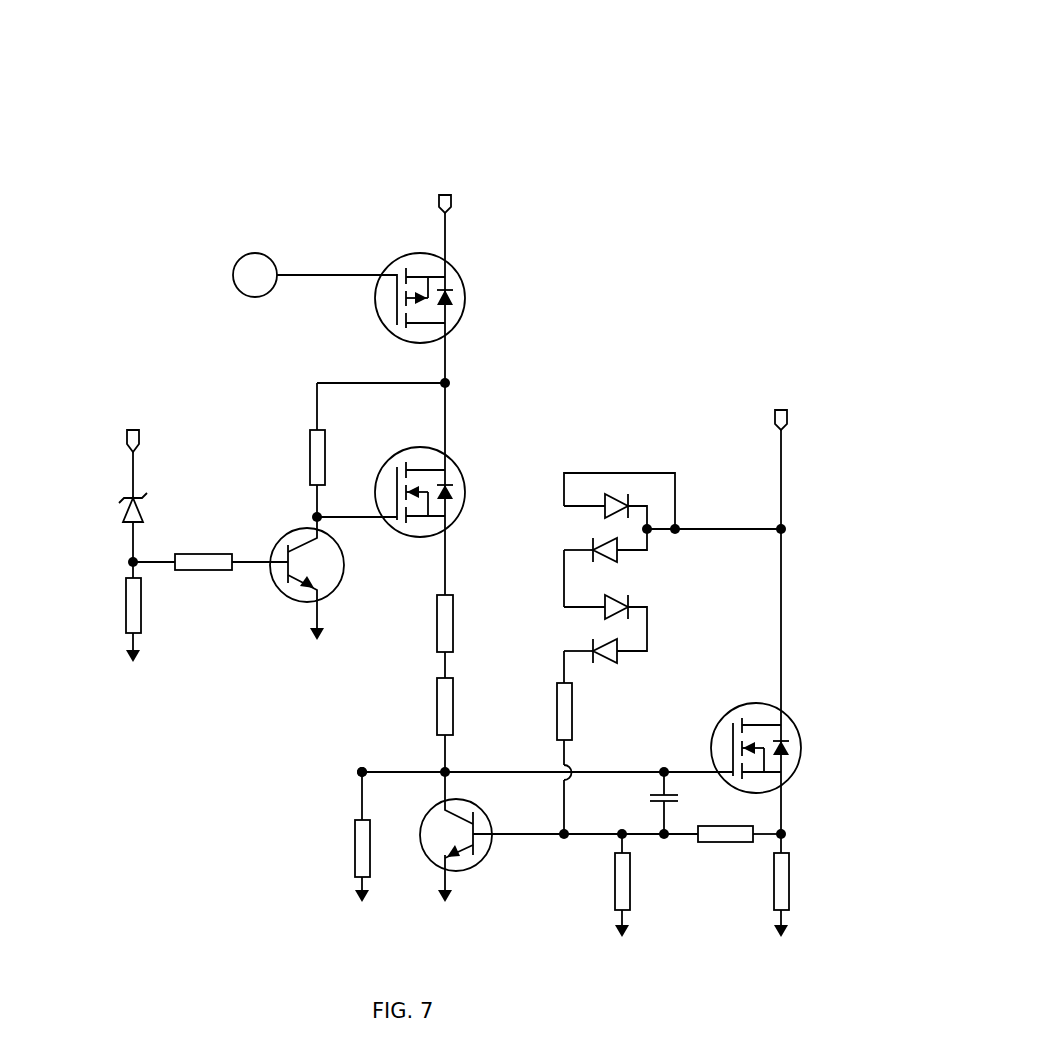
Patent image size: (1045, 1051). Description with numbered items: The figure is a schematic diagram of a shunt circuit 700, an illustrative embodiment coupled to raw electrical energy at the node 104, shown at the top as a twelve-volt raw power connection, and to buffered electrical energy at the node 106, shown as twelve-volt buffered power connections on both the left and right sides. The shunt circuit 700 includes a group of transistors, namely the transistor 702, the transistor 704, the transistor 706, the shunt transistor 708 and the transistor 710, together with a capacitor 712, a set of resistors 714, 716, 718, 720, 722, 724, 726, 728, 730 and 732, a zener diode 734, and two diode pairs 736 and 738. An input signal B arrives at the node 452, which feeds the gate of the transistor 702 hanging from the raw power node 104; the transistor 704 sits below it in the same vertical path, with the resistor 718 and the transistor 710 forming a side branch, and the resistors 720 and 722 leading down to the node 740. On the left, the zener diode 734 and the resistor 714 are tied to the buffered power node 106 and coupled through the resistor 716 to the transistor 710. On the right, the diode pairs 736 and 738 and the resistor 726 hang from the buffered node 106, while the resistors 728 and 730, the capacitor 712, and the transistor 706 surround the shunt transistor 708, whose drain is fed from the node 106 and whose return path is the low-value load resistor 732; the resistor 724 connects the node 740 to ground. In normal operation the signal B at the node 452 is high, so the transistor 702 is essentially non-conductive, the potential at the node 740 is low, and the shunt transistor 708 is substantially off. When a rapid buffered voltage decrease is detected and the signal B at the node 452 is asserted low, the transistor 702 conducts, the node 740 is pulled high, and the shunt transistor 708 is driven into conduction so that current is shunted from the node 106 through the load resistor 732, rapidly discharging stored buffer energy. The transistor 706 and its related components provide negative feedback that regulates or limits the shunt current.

The shunt circuit 700 is at (588, 63).
The node 104 is at (452, 203).
The node 106 is at (140, 438).
The node 452 is at (233, 272).
The transistor 702 is at (465, 296).
The transistor 704 is at (463, 487).
The transistor 706 is at (480, 862).
The shunt transistor 708 is at (802, 763).
The transistor 710 is at (340, 578).
The capacitor 712 is at (652, 797).
The resistor 714 is at (125, 592).
The resistor 716 is at (182, 571).
The resistor 718 is at (310, 445).
The resistor 720 is at (437, 620).
The resistor 722 is at (437, 697).
The resistor 724 is at (355, 835).
The resistor 726 is at (556, 693).
The resistor 728 is at (614, 868).
The resistor 730 is at (722, 843).
The load resistor 732 is at (773, 868).
The zener diode 734 is at (123, 508).
The diode pair 736 is at (660, 545).
The diode pair 738 is at (660, 640).
The node 740 is at (360, 770).